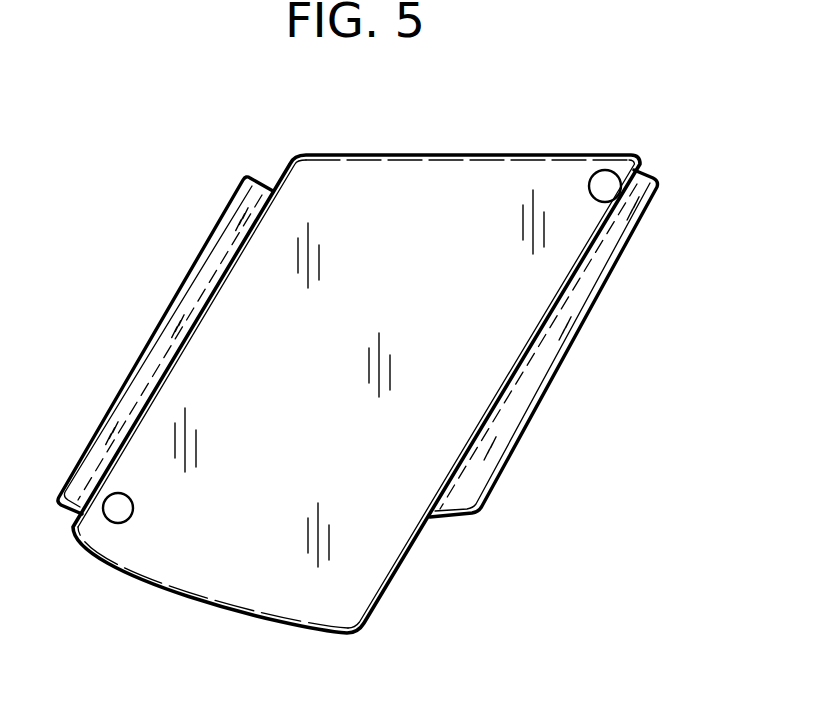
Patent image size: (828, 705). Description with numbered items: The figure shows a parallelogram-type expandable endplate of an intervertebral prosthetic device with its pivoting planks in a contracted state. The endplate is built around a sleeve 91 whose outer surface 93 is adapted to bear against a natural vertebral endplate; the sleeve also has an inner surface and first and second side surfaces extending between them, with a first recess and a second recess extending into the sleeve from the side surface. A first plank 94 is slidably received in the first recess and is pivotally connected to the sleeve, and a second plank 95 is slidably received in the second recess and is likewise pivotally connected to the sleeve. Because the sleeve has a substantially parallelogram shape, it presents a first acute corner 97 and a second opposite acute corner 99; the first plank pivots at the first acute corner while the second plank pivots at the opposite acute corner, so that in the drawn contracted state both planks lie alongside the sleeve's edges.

The sleeve 91 is at (470, 257).
The outer surface 93 is at (384, 172).
The first plank 94 is at (183, 307).
The second plank 95 is at (563, 363).
The first acute corner 97 is at (167, 515).
The second opposite acute corner 99 is at (570, 242).